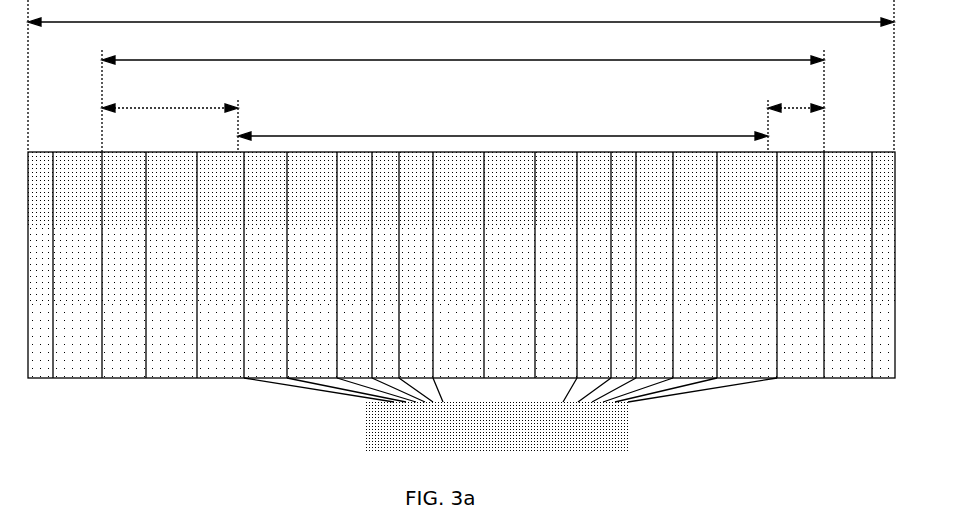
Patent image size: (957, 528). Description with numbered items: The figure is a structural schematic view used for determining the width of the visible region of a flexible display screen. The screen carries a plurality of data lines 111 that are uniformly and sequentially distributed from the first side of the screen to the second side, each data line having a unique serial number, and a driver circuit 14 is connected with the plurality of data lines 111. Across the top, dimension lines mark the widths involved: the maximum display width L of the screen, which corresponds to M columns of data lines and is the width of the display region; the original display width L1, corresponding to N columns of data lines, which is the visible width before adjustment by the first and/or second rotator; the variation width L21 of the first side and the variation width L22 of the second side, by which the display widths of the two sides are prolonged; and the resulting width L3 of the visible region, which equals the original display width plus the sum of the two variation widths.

The data lines 111 is at (286, 217).
The driver circuit 14 is at (510, 415).
The maximum display width L is at (461, 76).
The original display width L1 is at (503, 126).
The variation width of the first side L21 is at (170, 117).
The variation width of the second side L22 is at (796, 117).
The width of the visible region L3 is at (463, 94).